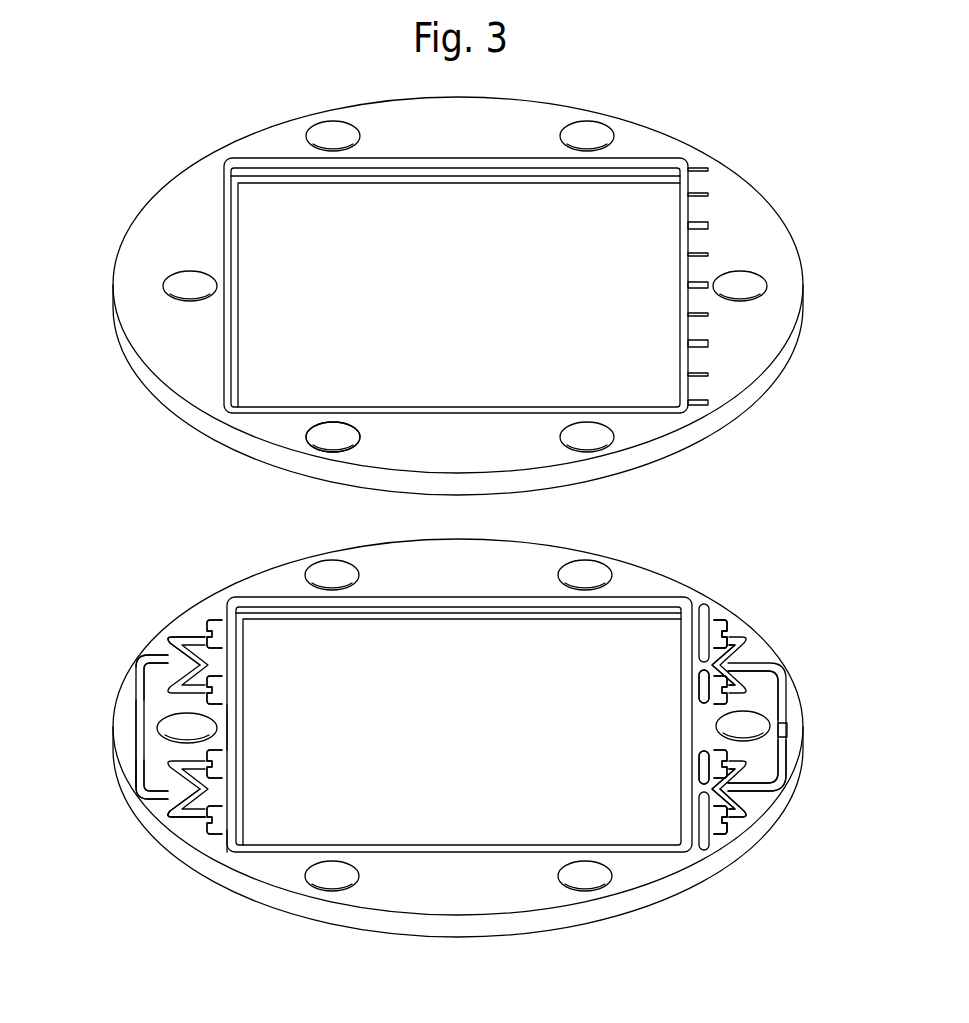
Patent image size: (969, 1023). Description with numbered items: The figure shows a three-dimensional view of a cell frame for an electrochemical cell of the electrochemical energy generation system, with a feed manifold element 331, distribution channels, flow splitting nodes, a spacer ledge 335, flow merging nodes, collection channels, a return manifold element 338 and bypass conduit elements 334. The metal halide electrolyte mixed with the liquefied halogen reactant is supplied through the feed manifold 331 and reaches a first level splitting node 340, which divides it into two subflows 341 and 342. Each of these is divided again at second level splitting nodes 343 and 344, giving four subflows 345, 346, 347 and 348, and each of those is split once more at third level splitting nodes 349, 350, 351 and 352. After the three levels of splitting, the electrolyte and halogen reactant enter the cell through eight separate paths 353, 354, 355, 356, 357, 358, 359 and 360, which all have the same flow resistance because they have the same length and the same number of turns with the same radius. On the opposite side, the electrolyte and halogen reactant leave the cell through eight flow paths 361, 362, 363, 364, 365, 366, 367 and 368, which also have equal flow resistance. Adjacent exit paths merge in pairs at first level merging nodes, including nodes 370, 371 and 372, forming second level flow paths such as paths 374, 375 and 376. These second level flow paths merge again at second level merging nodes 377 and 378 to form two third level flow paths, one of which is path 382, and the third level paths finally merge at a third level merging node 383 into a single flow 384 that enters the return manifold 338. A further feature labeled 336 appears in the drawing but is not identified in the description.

The feed manifold element 331 is at (184, 283).
The bypass conduit element 334 is at (350, 434).
The spacer ledge 335 is at (472, 608).
The contact strip 336 is at (706, 614).
The return manifold element 338 is at (733, 282).
The first level splitting node 340 is at (158, 727).
The subflow 341 is at (145, 704).
The subflow 342 is at (150, 792).
The second level splitting node 343 is at (150, 658).
The second level splitting node 344 is at (165, 808).
The subflow 345 is at (170, 640).
The subflow 346 is at (140, 686).
The subflow 347 is at (152, 780).
The subflow 348 is at (185, 830).
The third level splitting node 349 is at (226, 641).
The third level splitting node 350 is at (226, 698).
The third level splitting node 351 is at (226, 760).
The third level splitting node 352 is at (226, 815).
The flow path 353 is at (226, 626).
The flow path 354 is at (226, 662).
The flow path 355 is at (226, 683).
The flow path 356 is at (226, 716).
The flow path 357 is at (226, 745).
The flow path 358 is at (226, 778).
The flow path 359 is at (226, 796).
The flow path 360 is at (226, 836).
The flow path 361 is at (696, 613).
The flow path 362 is at (698, 650).
The flow path 363 is at (700, 672).
The flow path 364 is at (700, 700).
The flow path 365 is at (700, 760).
The flow path 366 is at (700, 790).
The flow path 367 is at (700, 815).
The flow path 368 is at (700, 845).
The first level merging node 370 is at (728, 700).
The first level merging node 371 is at (745, 672).
The first level merging node 372 is at (735, 645).
The second level flow path 374 is at (768, 780).
The second level flow path 375 is at (750, 757).
The second level flow path 376 is at (724, 823).
The second level merging node 377 is at (737, 660).
The second level merging node 378 is at (756, 798).
The third level flow path 382 is at (780, 785).
The third level merging node 383 is at (765, 722).
The single flow 384 is at (790, 731).